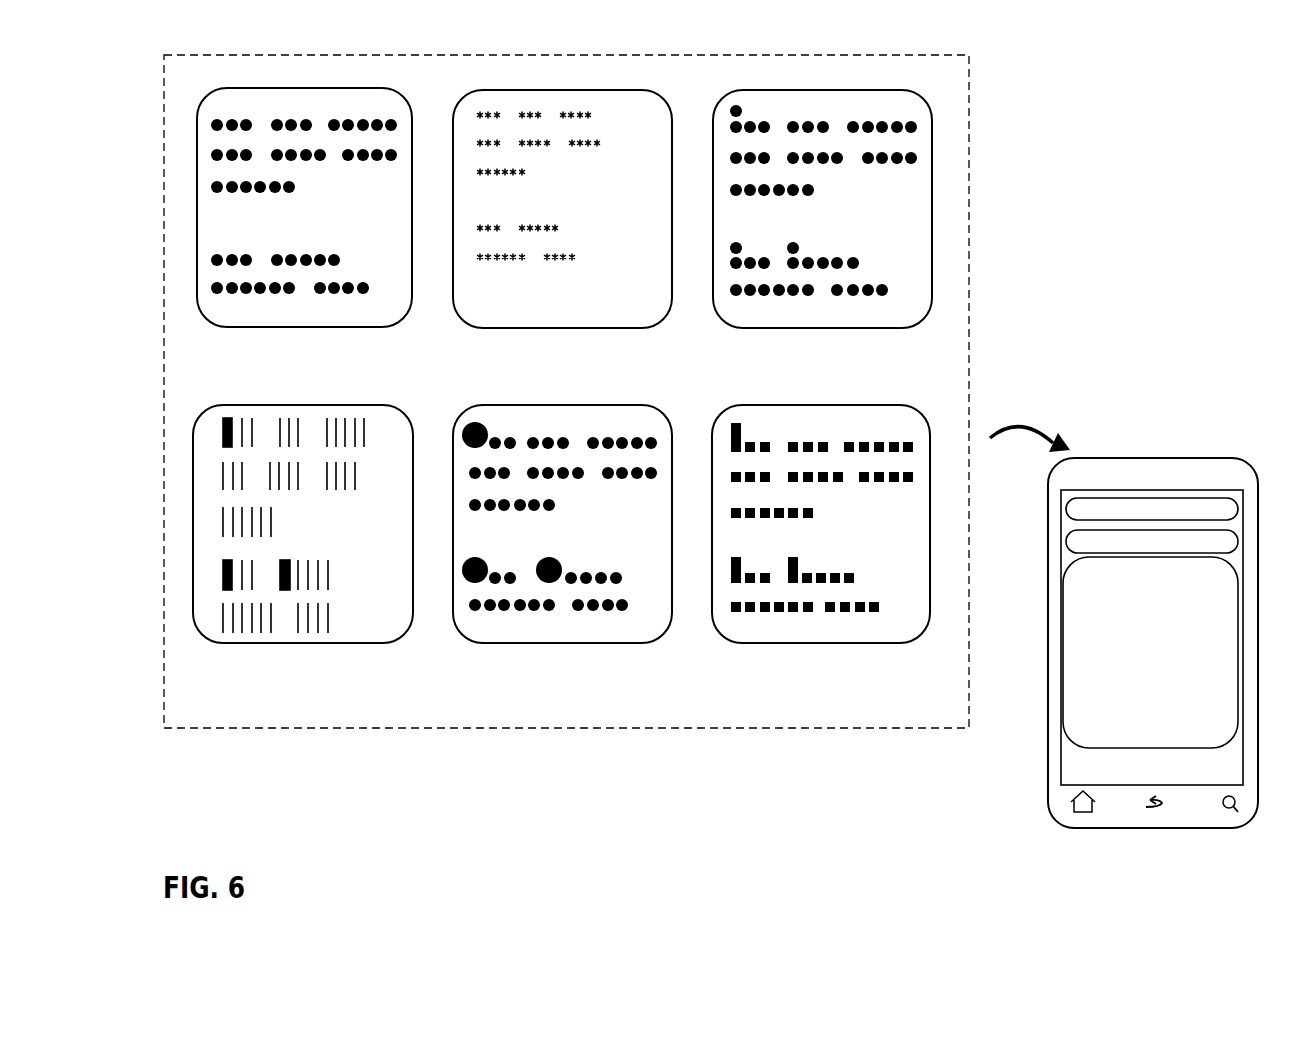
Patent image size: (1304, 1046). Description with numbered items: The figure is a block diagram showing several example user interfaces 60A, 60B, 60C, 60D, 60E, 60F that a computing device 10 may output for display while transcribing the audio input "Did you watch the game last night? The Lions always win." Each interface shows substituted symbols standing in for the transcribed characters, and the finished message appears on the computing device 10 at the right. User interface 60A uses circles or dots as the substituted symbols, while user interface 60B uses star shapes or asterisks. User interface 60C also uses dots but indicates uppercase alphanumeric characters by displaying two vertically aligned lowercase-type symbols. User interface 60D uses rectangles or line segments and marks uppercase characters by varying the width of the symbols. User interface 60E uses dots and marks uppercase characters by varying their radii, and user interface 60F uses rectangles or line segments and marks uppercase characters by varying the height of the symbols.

The computing device 10 is at (1198, 828).
The user interface 60A is at (353, 327).
The user interface 60B is at (612, 328).
The user interface 60C is at (872, 328).
The user interface 60D is at (353, 643).
The user interface 60E is at (610, 643).
The user interface 60F is at (868, 643).